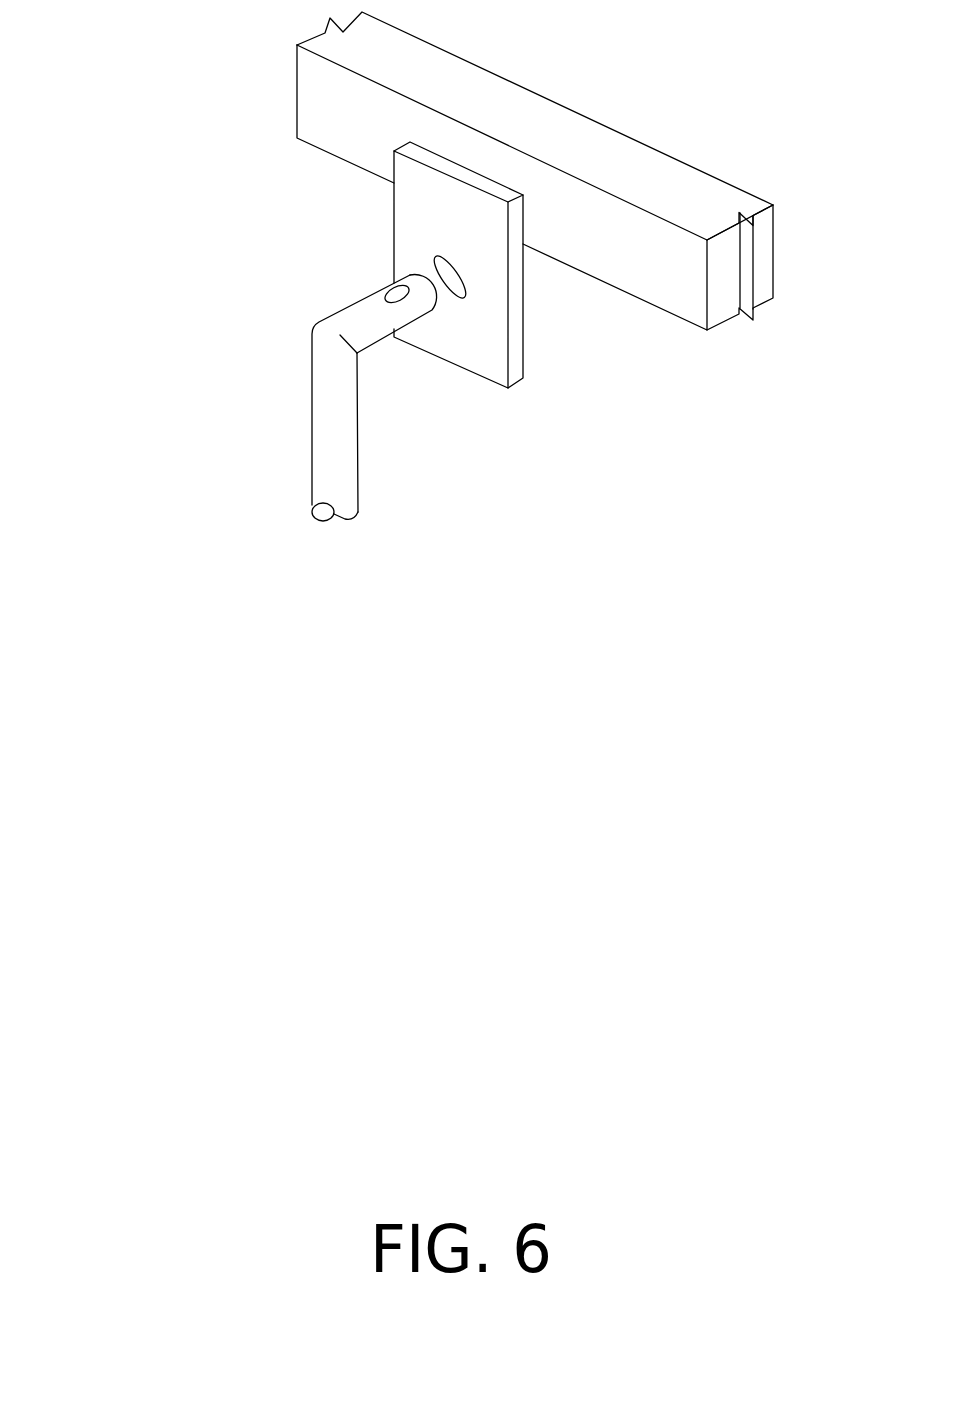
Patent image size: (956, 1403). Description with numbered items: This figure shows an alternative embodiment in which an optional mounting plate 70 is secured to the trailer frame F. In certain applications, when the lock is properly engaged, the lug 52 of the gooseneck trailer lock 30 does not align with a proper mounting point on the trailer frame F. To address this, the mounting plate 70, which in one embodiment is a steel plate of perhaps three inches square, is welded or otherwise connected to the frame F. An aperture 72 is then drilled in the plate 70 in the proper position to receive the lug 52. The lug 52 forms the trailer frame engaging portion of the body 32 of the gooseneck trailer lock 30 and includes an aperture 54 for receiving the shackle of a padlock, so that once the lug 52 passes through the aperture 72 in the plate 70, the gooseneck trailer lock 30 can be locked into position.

The trailer frame F is at (673, 183).
The gooseneck trailer lock 30 is at (252, 340).
The body 32 is at (323, 388).
The lug 52 is at (327, 256).
The aperture 54 is at (391, 288).
The mounting plate 70 is at (526, 319).
The aperture 72 is at (458, 295).